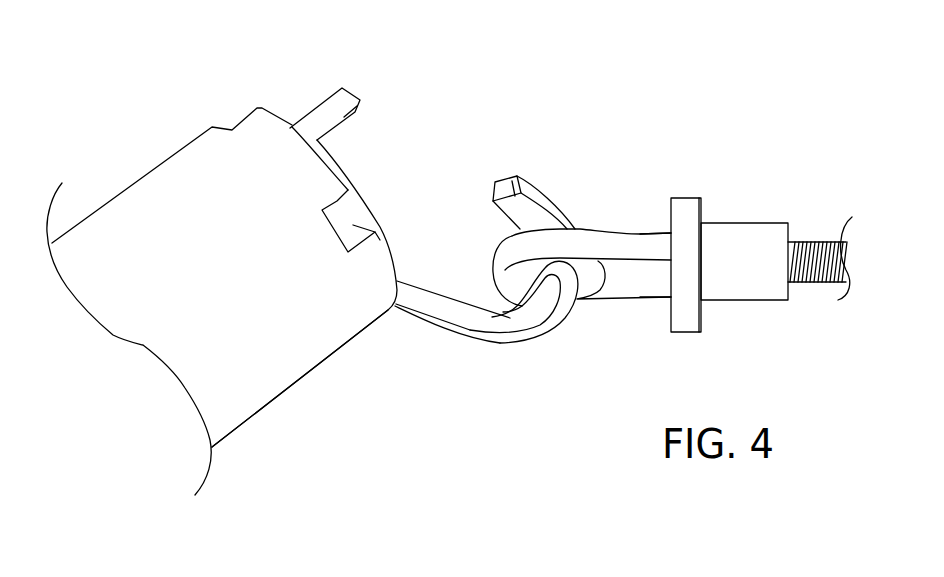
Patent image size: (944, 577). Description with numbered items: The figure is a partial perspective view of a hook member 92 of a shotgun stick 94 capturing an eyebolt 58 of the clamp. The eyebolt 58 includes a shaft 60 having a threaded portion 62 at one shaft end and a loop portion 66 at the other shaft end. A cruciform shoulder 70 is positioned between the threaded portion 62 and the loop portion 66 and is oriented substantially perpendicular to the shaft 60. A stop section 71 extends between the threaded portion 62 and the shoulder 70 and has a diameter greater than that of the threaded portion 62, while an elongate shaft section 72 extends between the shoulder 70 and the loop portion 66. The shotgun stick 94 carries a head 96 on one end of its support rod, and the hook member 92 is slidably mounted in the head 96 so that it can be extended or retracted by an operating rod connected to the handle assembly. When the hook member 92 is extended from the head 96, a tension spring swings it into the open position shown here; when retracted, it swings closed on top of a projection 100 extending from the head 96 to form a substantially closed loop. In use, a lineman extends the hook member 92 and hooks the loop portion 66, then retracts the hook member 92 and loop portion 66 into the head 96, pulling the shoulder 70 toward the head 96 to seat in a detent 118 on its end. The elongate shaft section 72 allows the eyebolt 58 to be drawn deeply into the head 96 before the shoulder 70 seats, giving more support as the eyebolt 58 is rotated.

The eyebolt 58 is at (625, 300).
The shaft 60 is at (805, 282).
The threaded portion 62 is at (812, 238).
The loop portion 66 is at (577, 223).
The cruciform shoulder 70 is at (685, 318).
The stop section 71 is at (778, 222).
The elongate shaft section 72 is at (647, 228).
The hook member 92 is at (548, 185).
The shotgun stick 94 is at (252, 413).
The head 96 is at (173, 152).
The projection 100 is at (360, 98).
The detent 118 is at (345, 223).